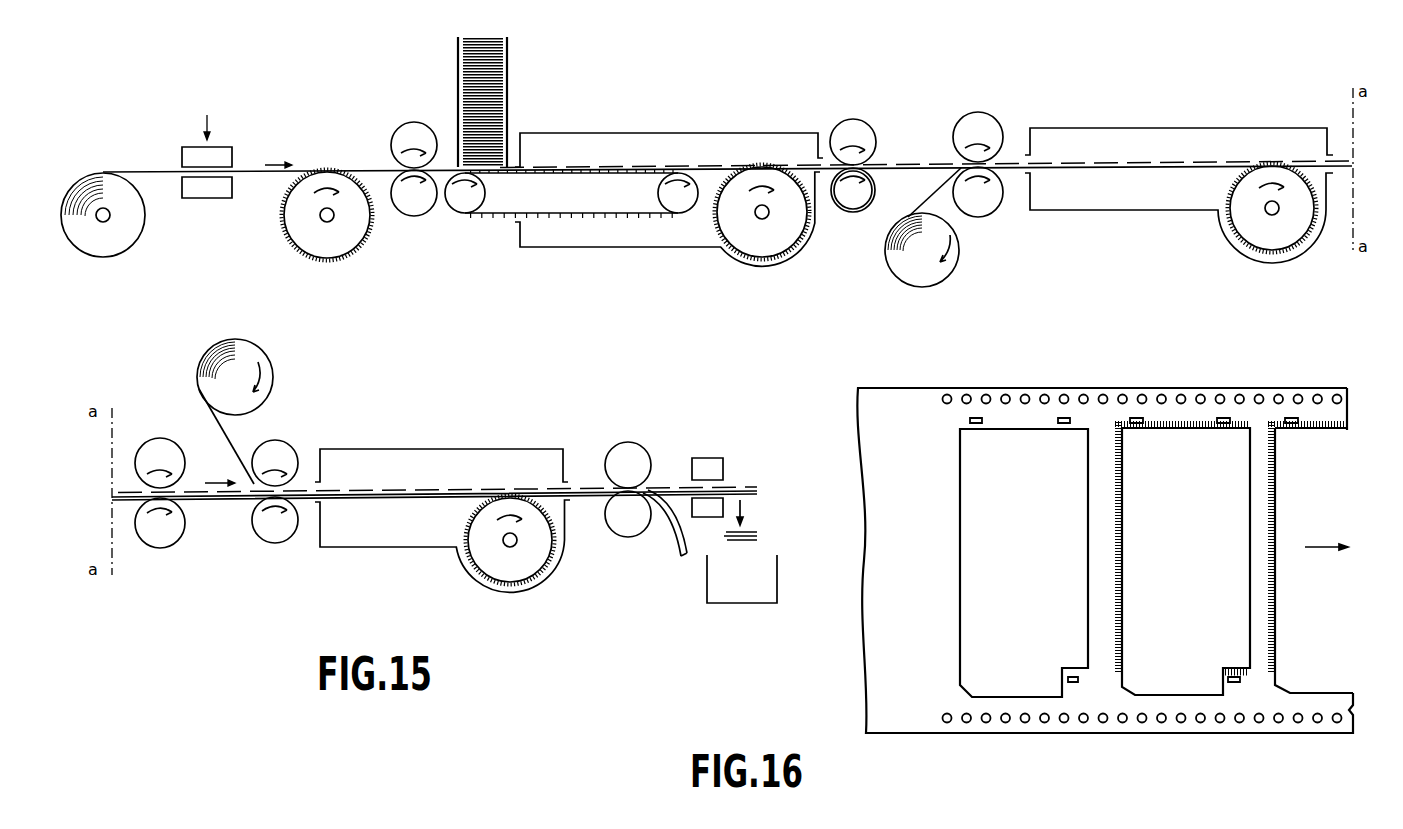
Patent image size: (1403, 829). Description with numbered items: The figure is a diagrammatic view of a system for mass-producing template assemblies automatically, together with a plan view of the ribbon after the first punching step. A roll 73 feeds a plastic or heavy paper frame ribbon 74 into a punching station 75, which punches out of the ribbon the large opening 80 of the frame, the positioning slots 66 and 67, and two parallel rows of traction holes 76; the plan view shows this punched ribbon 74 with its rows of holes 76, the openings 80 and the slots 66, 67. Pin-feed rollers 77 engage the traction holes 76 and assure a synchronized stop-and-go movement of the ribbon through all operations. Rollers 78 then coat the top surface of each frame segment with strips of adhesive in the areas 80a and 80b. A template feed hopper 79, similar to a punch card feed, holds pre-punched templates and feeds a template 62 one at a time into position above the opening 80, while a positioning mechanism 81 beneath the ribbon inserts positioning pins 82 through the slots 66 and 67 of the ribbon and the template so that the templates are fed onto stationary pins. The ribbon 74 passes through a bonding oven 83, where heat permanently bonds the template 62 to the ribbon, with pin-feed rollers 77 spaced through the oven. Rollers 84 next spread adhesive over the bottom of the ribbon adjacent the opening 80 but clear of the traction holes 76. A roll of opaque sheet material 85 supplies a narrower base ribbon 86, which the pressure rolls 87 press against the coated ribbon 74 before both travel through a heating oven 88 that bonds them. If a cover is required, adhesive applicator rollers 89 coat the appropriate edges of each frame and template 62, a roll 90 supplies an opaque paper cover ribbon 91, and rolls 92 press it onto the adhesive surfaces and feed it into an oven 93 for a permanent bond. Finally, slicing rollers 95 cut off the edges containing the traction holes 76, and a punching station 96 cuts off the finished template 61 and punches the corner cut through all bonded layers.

In FIG. 15, the template 61 is at (748, 529).
In FIG. 15, the template 62 is at (478, 113).
In FIG. 16, the positioning slot 66 is at (1064, 424).
In FIG. 16, the positioning slot 67 is at (1061, 680).
In FIG. 15, the roll 73 is at (131, 247).
In FIG. 15, the frame ribbon 74 is at (153, 172).
In FIG. 16, the frame ribbon 74 is at (882, 626).
In FIG. 15, the punching station 75 is at (232, 151).
In FIG. 16, the traction holes 76 is at (1088, 394).
In FIG. 15, the pin-feed rollers 77 is at (291, 241).
In FIG. 15, the rollers 78 is at (398, 128).
In FIG. 15, the template feed hopper 79 is at (507, 58).
In FIG. 16, the opening 80 is at (962, 615).
In FIG. 16, the area 80a is at (1118, 522).
In FIG. 16, the area 80b is at (1243, 668).
In FIG. 15, the positioning mechanism 81 is at (455, 212).
In FIG. 15, the positioning pins 82 is at (505, 217).
In FIG. 15, the bonding oven 83 is at (634, 133).
In FIG. 15, the rollers 84 is at (838, 126).
In FIG. 15, the roll of opaque sheet material 85 is at (913, 268).
In FIG. 15, the base ribbon 86 is at (929, 199).
In FIG. 15, the pressure rolls 87 is at (966, 122).
In FIG. 15, the heating oven 88 is at (1115, 128).
In FIG. 15, the adhesive applicator rollers 89 is at (157, 447).
In FIG. 15, the roll 90 is at (262, 351).
In FIG. 15, the cover ribbon 91 is at (235, 444).
In FIG. 15, the rolls 92 is at (286, 444).
In FIG. 15, the oven 93 is at (477, 449).
In FIG. 15, the slicing rollers 95 is at (629, 448).
In FIG. 15, the punching station 96 is at (709, 458).